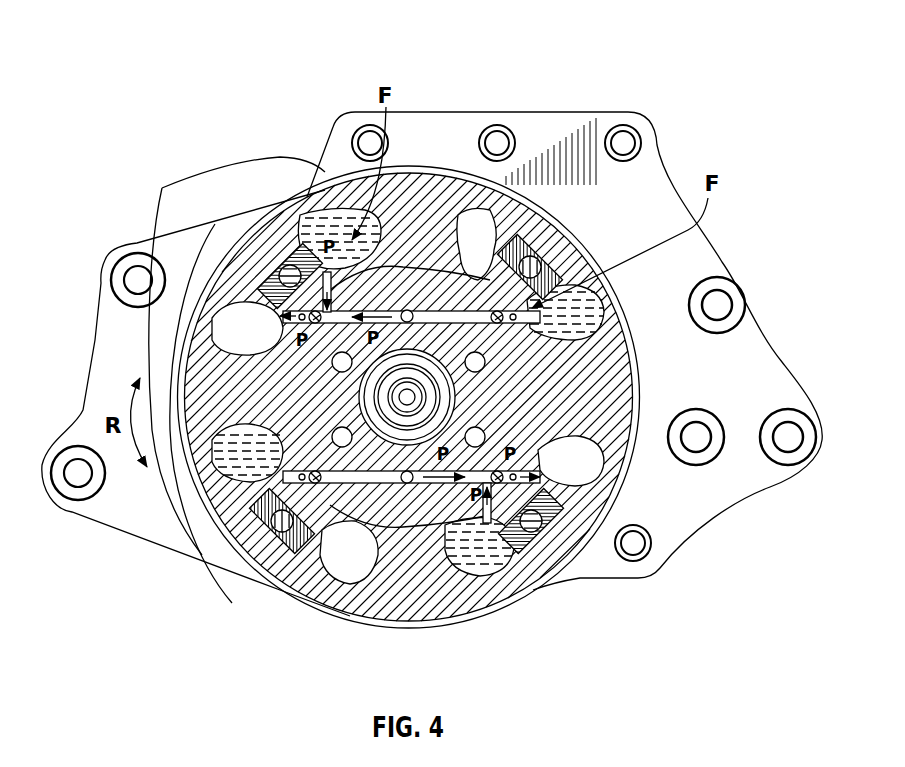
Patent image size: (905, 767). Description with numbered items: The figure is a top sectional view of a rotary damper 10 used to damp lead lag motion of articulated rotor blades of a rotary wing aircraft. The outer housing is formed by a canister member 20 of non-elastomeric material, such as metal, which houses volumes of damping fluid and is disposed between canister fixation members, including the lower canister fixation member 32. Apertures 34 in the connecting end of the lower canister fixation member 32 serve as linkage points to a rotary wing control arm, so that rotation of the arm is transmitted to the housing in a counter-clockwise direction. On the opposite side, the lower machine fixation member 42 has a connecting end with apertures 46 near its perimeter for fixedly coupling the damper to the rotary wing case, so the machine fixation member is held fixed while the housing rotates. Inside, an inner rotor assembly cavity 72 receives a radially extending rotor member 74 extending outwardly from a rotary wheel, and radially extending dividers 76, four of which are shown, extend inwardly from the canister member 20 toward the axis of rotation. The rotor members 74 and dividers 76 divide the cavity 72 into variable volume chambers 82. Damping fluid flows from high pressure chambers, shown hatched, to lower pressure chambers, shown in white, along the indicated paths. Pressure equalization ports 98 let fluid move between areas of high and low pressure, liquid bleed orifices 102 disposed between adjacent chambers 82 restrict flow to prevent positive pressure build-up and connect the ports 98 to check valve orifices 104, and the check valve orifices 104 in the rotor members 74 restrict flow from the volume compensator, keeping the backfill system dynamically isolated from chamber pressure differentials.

The rotary damper 10 is at (193, 55).
The canister member 20 is at (376, 481).
The lower canister fixation member 32 is at (110, 393).
The apertures 34 is at (82, 475).
The lower machine fixation member 42 is at (733, 377).
The apertures 46 is at (790, 430).
The inner rotor assembly cavity 72 is at (162, 188).
The radially extending rotor member 74 is at (265, 328).
The radially extending divider 76 is at (412, 215).
The variable volume chambers 82 is at (490, 232).
The pressure equalization ports 98 is at (406, 306).
The liquid bleed orifices 102 is at (432, 306).
The check valve orifices 104 is at (560, 247).